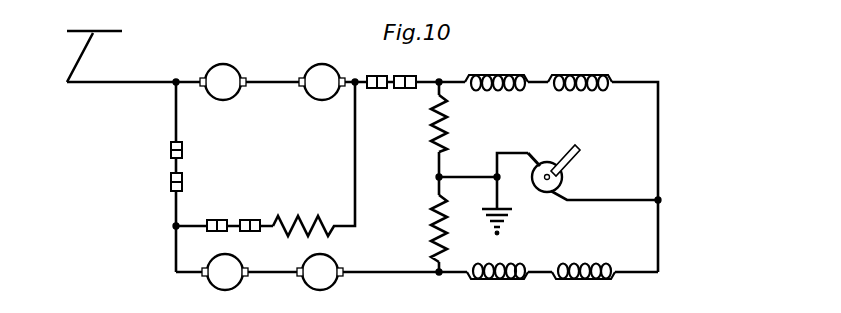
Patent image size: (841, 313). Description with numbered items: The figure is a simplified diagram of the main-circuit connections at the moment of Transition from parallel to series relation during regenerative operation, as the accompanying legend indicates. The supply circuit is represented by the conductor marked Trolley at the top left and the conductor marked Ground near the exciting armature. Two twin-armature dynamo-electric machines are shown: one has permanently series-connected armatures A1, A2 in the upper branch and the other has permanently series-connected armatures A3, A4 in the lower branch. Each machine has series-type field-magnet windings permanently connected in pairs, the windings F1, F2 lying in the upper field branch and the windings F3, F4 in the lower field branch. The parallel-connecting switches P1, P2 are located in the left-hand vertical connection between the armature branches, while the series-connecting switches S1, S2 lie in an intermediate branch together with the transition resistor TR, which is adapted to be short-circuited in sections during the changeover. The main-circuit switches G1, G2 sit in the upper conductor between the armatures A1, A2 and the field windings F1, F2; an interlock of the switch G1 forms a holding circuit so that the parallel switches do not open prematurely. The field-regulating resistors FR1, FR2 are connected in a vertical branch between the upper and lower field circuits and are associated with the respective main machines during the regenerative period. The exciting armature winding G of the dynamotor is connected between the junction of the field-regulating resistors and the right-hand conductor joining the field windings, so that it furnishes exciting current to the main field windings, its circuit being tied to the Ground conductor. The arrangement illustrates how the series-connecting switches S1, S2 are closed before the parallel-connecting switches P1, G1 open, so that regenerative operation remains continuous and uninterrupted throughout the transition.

The trolley supply-circuit conductor Trolley is at (122, 31).
The transition legend Transition is at (75, 137).
The armature A1 is at (223, 82).
The armature A2 is at (322, 82).
The armature A3 is at (225, 272).
The armature A4 is at (320, 272).
The parallel-connecting switch P1 is at (171, 151).
The parallel-connecting switch P2 is at (171, 183).
The series-connecting switch S1 is at (219, 213).
The series-connecting switch S2 is at (249, 220).
The transition resistor TR is at (309, 218).
The main-circuit switch G1 is at (380, 76).
The main-circuit switch G2 is at (408, 76).
The field-regulating resistor FR1 is at (448, 108).
The field-regulating resistor FR2 is at (448, 228).
The field-magnet winding F1 is at (500, 75).
The field-magnet winding F2 is at (590, 75).
The field-magnet winding F3 is at (485, 279).
The field-magnet winding F4 is at (571, 279).
The exciting armature winding G is at (532, 179).
The ground supply-circuit conductor Ground is at (505, 221).